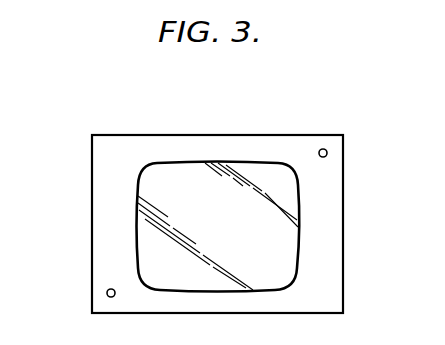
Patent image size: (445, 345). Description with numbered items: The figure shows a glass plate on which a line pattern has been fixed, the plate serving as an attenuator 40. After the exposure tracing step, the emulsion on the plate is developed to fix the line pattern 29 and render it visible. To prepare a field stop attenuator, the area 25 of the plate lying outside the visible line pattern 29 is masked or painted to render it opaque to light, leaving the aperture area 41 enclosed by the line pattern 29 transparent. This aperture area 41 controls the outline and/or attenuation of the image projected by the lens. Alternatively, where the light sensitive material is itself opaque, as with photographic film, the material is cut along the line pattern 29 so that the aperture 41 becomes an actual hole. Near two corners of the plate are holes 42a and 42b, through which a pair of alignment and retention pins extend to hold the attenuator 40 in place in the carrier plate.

The attenuator 40 is at (185, 136).
The area outside the visible line pattern 25 is at (120, 178).
The aperture area 41 is at (270, 198).
The line pattern 29 is at (298, 228).
The hole 42a is at (322, 149).
The hole 42b is at (107, 292).